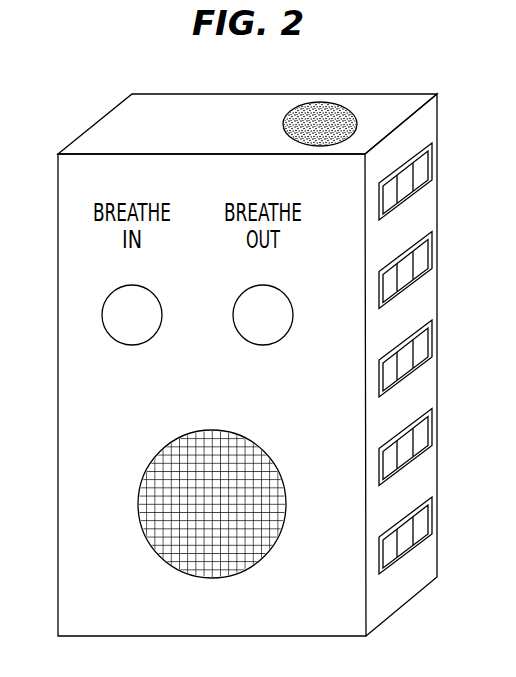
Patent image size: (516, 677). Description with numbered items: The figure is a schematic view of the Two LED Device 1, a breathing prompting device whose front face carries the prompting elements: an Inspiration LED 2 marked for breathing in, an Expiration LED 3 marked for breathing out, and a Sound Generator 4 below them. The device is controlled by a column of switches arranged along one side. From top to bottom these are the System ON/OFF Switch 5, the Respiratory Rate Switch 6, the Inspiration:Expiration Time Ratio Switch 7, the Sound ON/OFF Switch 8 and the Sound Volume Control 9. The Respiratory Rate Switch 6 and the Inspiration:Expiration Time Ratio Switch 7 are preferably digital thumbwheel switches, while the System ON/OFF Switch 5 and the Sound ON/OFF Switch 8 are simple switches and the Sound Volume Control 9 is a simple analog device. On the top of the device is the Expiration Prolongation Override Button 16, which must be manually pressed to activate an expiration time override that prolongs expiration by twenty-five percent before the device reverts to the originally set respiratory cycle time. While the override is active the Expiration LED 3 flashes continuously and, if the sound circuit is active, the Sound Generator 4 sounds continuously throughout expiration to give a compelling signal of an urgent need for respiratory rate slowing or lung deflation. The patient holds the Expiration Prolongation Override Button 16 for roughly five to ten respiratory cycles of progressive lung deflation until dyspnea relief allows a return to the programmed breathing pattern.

The Two LED Device 1 is at (228, 93).
The Inspiration LED 2 is at (102, 309).
The Expiration LED 3 is at (249, 342).
The Sound Generator 4 is at (138, 511).
The System ON/OFF Switch 5 is at (432, 165).
The Respiratory Rate Switch 6 is at (432, 252).
The Inspiration:Expiration Time Ratio Switch 7 is at (432, 340).
The Sound ON/OFF Switch 8 is at (432, 428).
The Sound Volume Control 9 is at (432, 515).
The Expiration Prolongation Override Button 16 is at (328, 102).